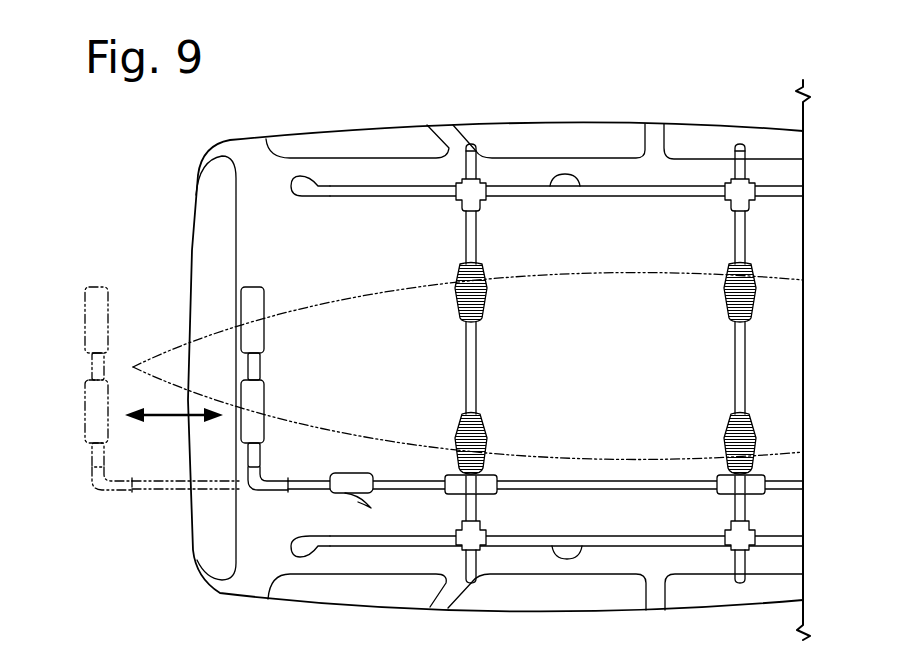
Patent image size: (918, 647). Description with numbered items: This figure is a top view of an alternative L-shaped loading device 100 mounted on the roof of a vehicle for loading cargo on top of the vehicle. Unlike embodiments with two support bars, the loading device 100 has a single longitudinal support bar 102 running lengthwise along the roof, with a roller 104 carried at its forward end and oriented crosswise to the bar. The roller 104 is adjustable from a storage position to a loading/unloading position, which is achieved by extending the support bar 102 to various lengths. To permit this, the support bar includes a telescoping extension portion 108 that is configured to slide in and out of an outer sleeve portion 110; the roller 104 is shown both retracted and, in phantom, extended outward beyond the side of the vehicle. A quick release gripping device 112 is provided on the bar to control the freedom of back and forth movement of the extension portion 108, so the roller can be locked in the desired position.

The L-shaped loading device 100 is at (702, 82).
The longitudinal support bar 102 is at (618, 492).
The roller 104 is at (243, 308).
The telescoping extension portion 108 is at (300, 490).
The outer sleeve portion 110 is at (407, 481).
The quick release gripping device 112 is at (350, 473).